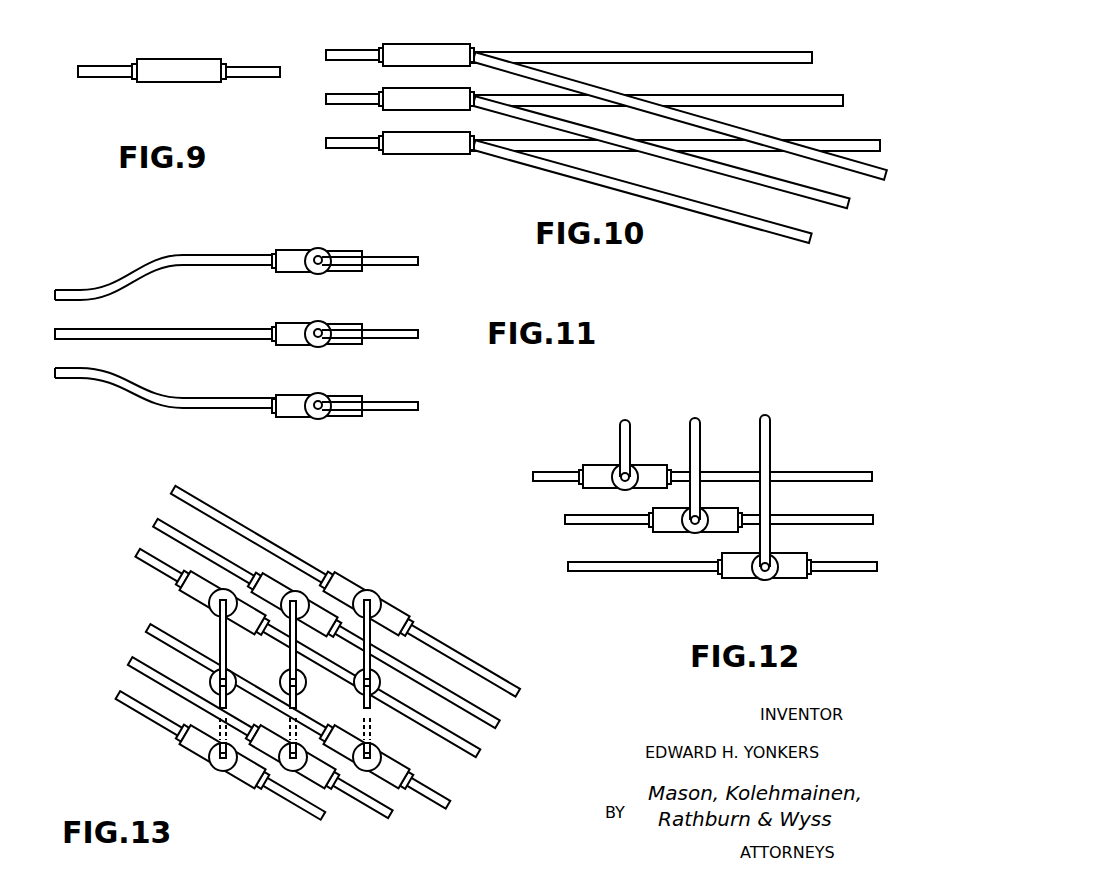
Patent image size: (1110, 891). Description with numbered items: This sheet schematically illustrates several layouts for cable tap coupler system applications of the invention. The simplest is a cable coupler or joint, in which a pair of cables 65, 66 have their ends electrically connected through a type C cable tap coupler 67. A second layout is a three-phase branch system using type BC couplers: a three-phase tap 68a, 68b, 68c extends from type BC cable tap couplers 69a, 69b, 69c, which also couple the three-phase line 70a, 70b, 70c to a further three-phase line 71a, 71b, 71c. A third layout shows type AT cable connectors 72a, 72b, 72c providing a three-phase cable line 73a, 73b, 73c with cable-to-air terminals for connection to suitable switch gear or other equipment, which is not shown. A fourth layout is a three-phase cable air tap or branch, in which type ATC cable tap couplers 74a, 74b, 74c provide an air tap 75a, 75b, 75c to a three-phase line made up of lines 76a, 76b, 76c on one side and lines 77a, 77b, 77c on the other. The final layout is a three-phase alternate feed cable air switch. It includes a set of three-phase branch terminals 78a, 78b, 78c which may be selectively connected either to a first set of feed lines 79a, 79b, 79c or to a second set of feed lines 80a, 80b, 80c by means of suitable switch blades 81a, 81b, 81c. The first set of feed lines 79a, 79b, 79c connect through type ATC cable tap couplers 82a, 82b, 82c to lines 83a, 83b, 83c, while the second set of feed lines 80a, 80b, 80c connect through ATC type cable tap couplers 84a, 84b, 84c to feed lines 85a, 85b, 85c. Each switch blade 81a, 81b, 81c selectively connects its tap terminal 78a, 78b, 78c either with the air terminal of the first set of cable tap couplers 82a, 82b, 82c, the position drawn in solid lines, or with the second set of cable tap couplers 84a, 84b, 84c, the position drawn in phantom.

In FIG. 9, the cable 65 is at (110, 79).
In FIG. 9, the cable 66 is at (248, 79).
In FIG. 9, the type C cable tap coupler 67 is at (181, 59).
In FIG. 10, the three-phase tap 68a is at (856, 172).
In FIG. 10, the three-phase tap 68b is at (826, 205).
In FIG. 10, the three-phase tap 68c is at (742, 226).
In FIG. 10, the type BC cable tap coupler 69a is at (441, 44).
In FIG. 10, the type BC cable tap coupler 69b is at (457, 98).
In FIG. 10, the type BC cable tap coupler 69c is at (433, 156).
In FIG. 10, the three-phase line 70a is at (341, 50).
In FIG. 10, the three-phase line 70b is at (348, 104).
In FIG. 10, the three-phase line 70c is at (362, 149).
In FIG. 10, the three-phase line 71a is at (728, 51).
In FIG. 10, the three-phase line 71b is at (810, 95).
In FIG. 10, the three-phase line 71c is at (845, 139).
In FIG. 11, the type AT cable connector 72a is at (356, 273).
In FIG. 11, the type AT cable connector 72b is at (351, 345).
In FIG. 11, the type AT cable connector 72c is at (349, 418).
In FIG. 11, the three-phase cable line 73a is at (143, 268).
In FIG. 11, the three-phase cable line 73b is at (143, 340).
In FIG. 11, the three-phase cable line 73c is at (153, 406).
In FIG. 12, the type ATC cable tap coupler 74a is at (601, 465).
In FIG. 12, the type ATC cable tap coupler 74b is at (661, 533).
In FIG. 12, the type ATC cable tap coupler 74c is at (736, 579).
In FIG. 12, the air tap 75a is at (633, 437).
In FIG. 12, the air tap 75b is at (704, 441).
In FIG. 12, the air tap 75c is at (773, 447).
In FIG. 12, the three-phase line 76a is at (550, 470).
In FIG. 12, the three-phase line 76b is at (586, 515).
In FIG. 12, the three-phase line 76c is at (586, 560).
In FIG. 12, the three-phase line 77a is at (828, 471).
In FIG. 12, the three-phase line 77b is at (835, 516).
In FIG. 12, the three-phase line 77c is at (858, 579).
In FIG. 13, the three-phase branch terminal 78a is at (377, 708).
In FIG. 13, the three-phase branch terminal 78b is at (306, 686).
In FIG. 13, the three-phase branch terminal 78c is at (233, 673).
In FIG. 13, the first feed line 79a is at (178, 504).
In FIG. 13, the first feed line 79b is at (160, 533).
In FIG. 13, the first feed line 79c is at (143, 562).
In FIG. 13, the second feed line 80a is at (151, 638).
In FIG. 13, the second feed line 80b is at (147, 667).
In FIG. 13, the second feed line 80c is at (140, 703).
In FIG. 13, the switch blade 81a is at (376, 632).
In FIG. 13, the switch blade 81b is at (299, 600).
In FIG. 13, the switch blade 81c is at (219, 630).
In FIG. 13, the type ATC cable tap coupler 82a is at (386, 614).
In FIG. 13, the type ATC cable tap coupler 82b is at (278, 581).
In FIG. 13, the type ATC cable tap coupler 82c is at (186, 597).
In FIG. 13, the line 83a is at (499, 681).
In FIG. 13, the line 83b is at (484, 712).
In FIG. 13, the line 83c is at (461, 740).
In FIG. 13, the ATC type cable tap coupler 84a is at (391, 788).
In FIG. 13, the ATC type cable tap coupler 84b is at (319, 786).
In FIG. 13, the ATC type cable tap coupler 84c is at (197, 754).
In FIG. 13, the feed line 85a is at (438, 796).
In FIG. 13, the feed line 85b is at (382, 818).
In FIG. 13, the feed line 85c is at (278, 796).